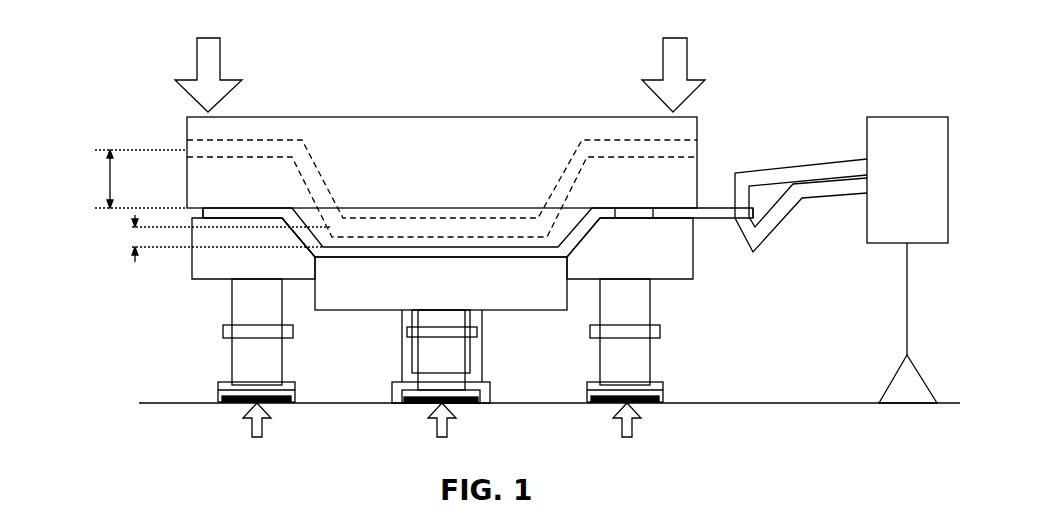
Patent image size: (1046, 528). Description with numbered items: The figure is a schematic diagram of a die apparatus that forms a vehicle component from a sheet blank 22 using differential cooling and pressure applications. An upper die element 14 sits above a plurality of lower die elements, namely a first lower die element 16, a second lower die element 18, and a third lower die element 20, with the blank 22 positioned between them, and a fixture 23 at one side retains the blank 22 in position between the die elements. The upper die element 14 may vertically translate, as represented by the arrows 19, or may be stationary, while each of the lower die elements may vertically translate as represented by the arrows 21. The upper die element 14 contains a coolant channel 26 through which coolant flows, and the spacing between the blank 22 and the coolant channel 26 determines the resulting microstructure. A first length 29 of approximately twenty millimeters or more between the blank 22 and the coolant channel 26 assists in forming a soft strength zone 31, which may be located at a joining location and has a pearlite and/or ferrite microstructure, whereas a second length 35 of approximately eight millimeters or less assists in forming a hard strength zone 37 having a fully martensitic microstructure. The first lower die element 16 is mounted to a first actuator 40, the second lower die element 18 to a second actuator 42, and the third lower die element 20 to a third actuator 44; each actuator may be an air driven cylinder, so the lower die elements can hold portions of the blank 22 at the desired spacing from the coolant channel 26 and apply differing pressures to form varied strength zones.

The upper die element 14 is at (475, 122).
The first lower die element 16 is at (200, 263).
The second lower die element 18 is at (338, 295).
The arrows 19 is at (220, 58).
The third lower die element 20 is at (678, 268).
The arrows 21 is at (250, 425).
The blank 22 is at (310, 258).
The fixture 23 is at (908, 117).
The coolant channel 26 is at (314, 162).
The first length 29 is at (108, 180).
The soft strength zone 31 is at (240, 218).
The second length 35 is at (137, 260).
The hard strength zone 37 is at (405, 247).
The first actuator 40 is at (232, 358).
The second actuator 42 is at (402, 358).
The third actuator 44 is at (600, 355).